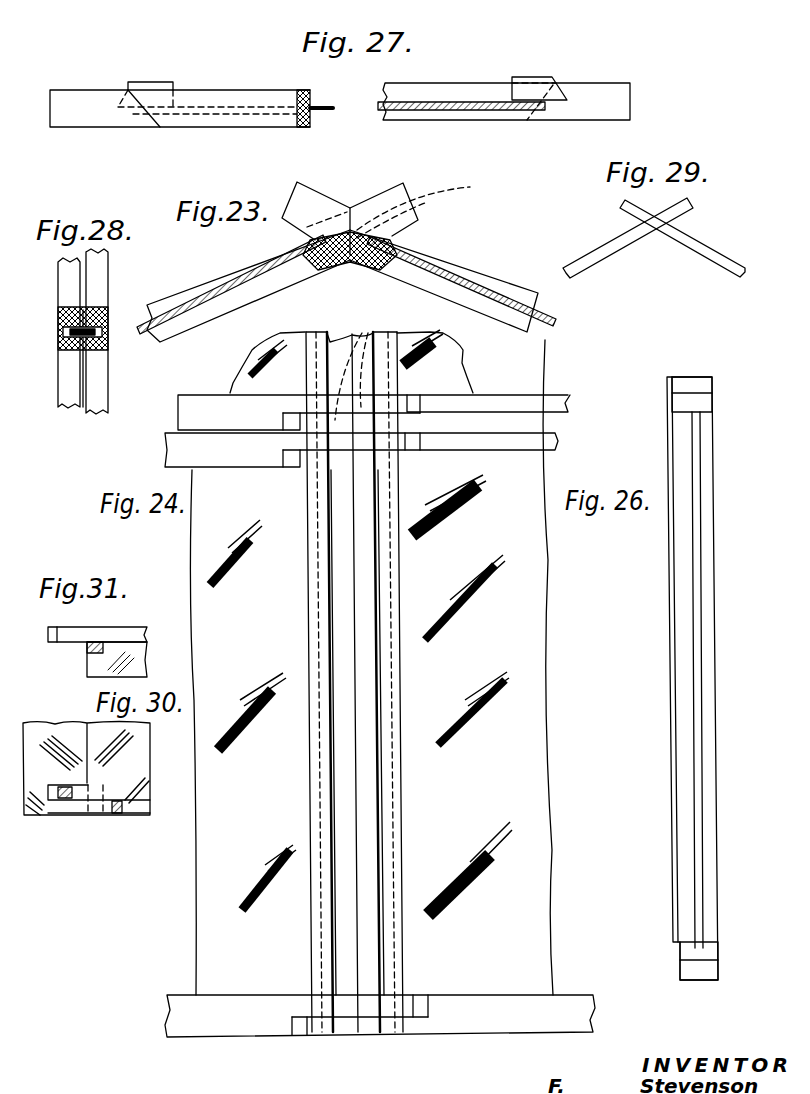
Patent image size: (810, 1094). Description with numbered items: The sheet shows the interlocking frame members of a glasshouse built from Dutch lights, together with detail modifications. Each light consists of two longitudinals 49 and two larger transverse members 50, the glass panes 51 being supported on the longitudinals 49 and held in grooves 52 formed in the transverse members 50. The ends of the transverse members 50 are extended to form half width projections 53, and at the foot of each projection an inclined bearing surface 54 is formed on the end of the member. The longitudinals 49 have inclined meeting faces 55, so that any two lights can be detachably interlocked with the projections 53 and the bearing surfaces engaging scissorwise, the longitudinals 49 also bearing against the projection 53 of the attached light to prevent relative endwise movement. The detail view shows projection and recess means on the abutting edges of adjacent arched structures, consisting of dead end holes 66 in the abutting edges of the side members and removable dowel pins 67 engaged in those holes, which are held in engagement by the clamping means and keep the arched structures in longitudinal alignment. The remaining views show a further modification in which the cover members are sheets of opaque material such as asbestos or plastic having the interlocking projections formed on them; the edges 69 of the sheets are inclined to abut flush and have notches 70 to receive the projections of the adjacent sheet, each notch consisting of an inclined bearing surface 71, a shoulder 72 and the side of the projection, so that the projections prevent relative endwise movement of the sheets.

In FIG. 27, the longitudinals 49 is at (538, 80).
In FIG. 23, the longitudinals 49 is at (378, 263).
In FIG. 24, the longitudinals 49 is at (345, 722).
In FIG. 26, the longitudinals 49 is at (672, 530).
In FIG. 27, the transverse members 50 is at (296, 90).
In FIG. 23, the transverse members 50 is at (252, 292).
In FIG. 24, the transverse members 50 is at (177, 442).
In FIG. 26, the transverse members 50 is at (713, 400).
In FIG. 27, the glass panes 51 is at (453, 103).
In FIG. 23, the glass panes 51 is at (525, 300).
In FIG. 24, the glass panes 51 is at (536, 590).
In FIG. 26, the grooves 52 is at (703, 947).
In FIG. 27, the half width projections 53 is at (85, 115).
In FIG. 23, the half width projections 53 is at (393, 196).
In FIG. 26, the half width projections 53 is at (704, 412).
In FIG. 27, the inclined bearing surfaces 54 is at (150, 118).
In FIG. 23, the inclined bearing surfaces 54 is at (430, 207).
In FIG. 24, the inclined bearing surfaces 54 is at (362, 335).
In FIG. 26, the inclined bearing surfaces 54 is at (690, 383).
In FIG. 27, the inclined meeting faces 55 is at (562, 97).
In FIG. 23, the inclined meeting faces 55 is at (395, 246).
In FIG. 26, the inclined meeting faces 55 is at (672, 800).
In FIG. 28, the dead end holes 66 is at (97, 352).
In FIG. 28, the dowel pins 67 is at (105, 317).
In FIG. 29, the edges 69 is at (652, 225).
In FIG. 31, the edges 69 is at (88, 668).
In FIG. 31, the notches 70 is at (100, 646).
In FIG. 31, the inclined bearing surface 71 is at (130, 650).
In FIG. 31, the shoulder 72 is at (88, 648).